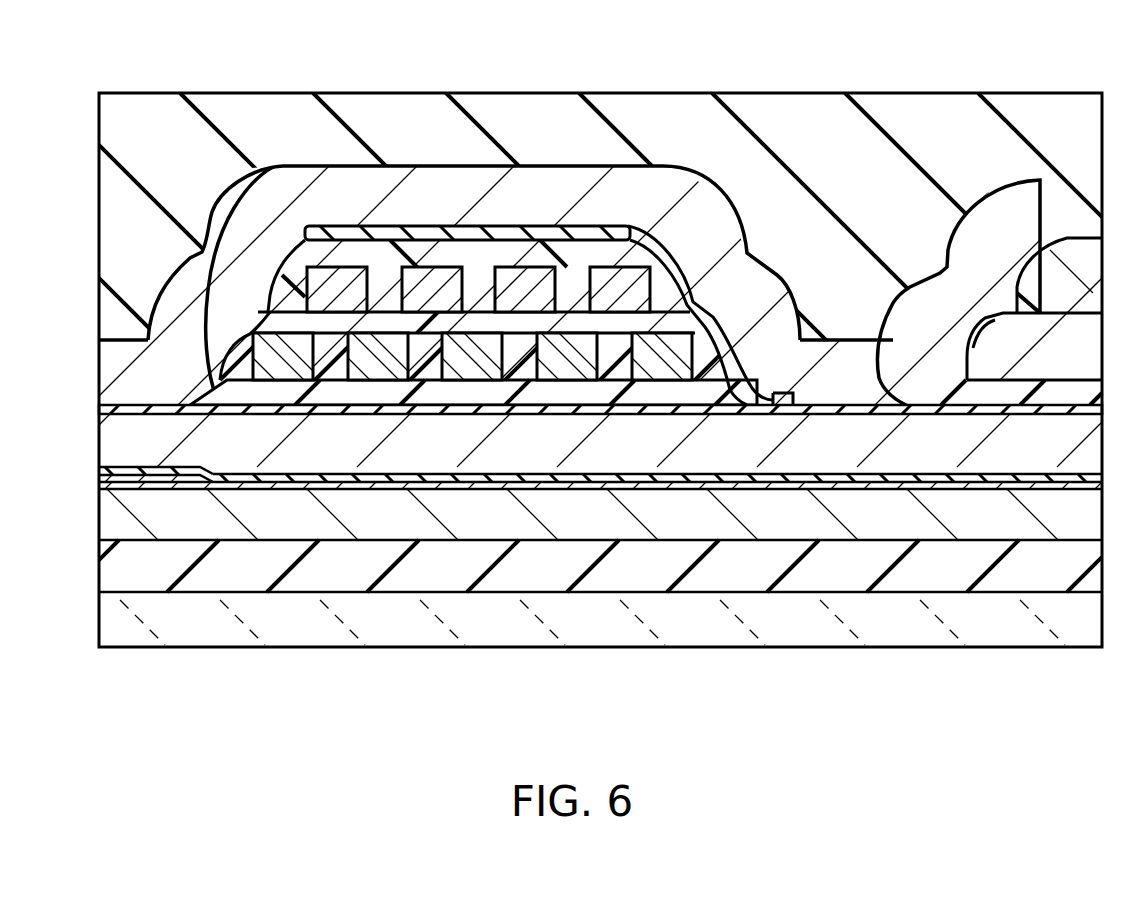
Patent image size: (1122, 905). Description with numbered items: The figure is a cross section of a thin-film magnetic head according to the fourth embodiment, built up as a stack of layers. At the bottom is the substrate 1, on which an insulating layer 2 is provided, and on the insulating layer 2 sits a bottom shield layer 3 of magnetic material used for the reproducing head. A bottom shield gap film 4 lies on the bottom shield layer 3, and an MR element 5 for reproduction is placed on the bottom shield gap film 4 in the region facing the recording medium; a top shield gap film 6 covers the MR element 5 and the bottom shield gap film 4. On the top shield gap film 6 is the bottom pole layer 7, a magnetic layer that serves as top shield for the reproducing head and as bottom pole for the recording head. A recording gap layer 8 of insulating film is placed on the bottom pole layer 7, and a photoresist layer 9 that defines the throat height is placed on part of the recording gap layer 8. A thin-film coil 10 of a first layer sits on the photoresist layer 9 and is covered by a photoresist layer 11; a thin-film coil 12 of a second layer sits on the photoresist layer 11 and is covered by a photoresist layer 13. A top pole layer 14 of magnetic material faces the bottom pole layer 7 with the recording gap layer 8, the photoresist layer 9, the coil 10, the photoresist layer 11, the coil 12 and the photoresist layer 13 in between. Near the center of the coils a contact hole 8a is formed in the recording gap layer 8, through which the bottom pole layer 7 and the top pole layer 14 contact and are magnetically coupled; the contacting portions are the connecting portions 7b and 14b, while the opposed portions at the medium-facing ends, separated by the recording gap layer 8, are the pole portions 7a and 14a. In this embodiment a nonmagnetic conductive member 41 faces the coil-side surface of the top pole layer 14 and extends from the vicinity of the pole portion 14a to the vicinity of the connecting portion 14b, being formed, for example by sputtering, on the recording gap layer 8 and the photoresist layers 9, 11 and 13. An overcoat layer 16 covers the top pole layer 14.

The substrate 1 is at (233, 637).
The insulating layer 2 is at (298, 580).
The bottom shield layer 3 is at (425, 523).
The bottom shield gap film 4 is at (675, 488).
The MR element 5 is at (117, 470).
The top shield gap film 6 is at (802, 480).
The bottom pole layer 7 is at (503, 453).
The pole portion 7a is at (130, 435).
The connecting portion 7b is at (838, 457).
The recording gap layer 8 is at (157, 408).
The contact hole 8a is at (884, 345).
The photoresist layer 9 is at (217, 398).
The thin-film coil 10 is at (300, 345).
The photoresist layer 11 is at (385, 327).
The thin-film coil 12 is at (428, 275).
The photoresist layer 13 is at (515, 247).
The top pole layer 14 is at (570, 197).
The pole portion 14a is at (122, 353).
The connecting portion 14b is at (850, 357).
The overcoat layer 16 is at (748, 108).
The nonmagnetic conductive member 41 is at (623, 237).